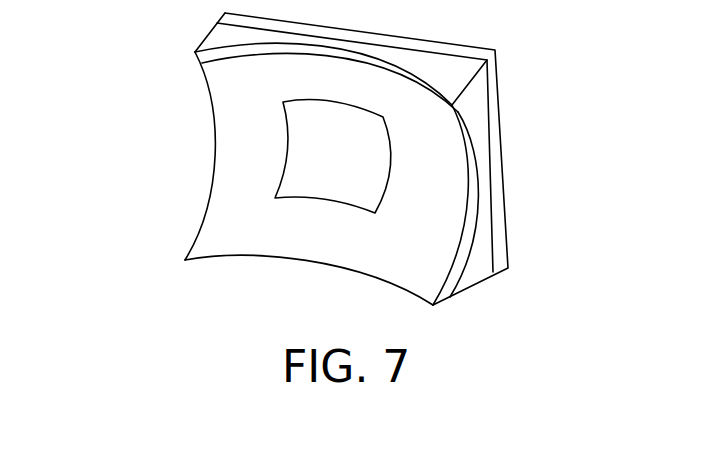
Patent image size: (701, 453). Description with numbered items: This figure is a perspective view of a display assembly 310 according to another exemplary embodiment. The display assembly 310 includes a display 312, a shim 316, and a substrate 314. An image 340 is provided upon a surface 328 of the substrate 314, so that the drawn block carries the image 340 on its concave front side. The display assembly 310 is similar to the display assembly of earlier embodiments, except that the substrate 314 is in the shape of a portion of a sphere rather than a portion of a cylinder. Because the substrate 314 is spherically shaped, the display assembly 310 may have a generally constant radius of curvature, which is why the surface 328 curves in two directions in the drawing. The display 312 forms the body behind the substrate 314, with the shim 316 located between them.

The display assembly 310 is at (316, 159).
The display 312 is at (476, 48).
The substrate 314 is at (441, 105).
The shim 316 is at (458, 76).
The surface 328 is at (306, 252).
The image 340 is at (356, 167).